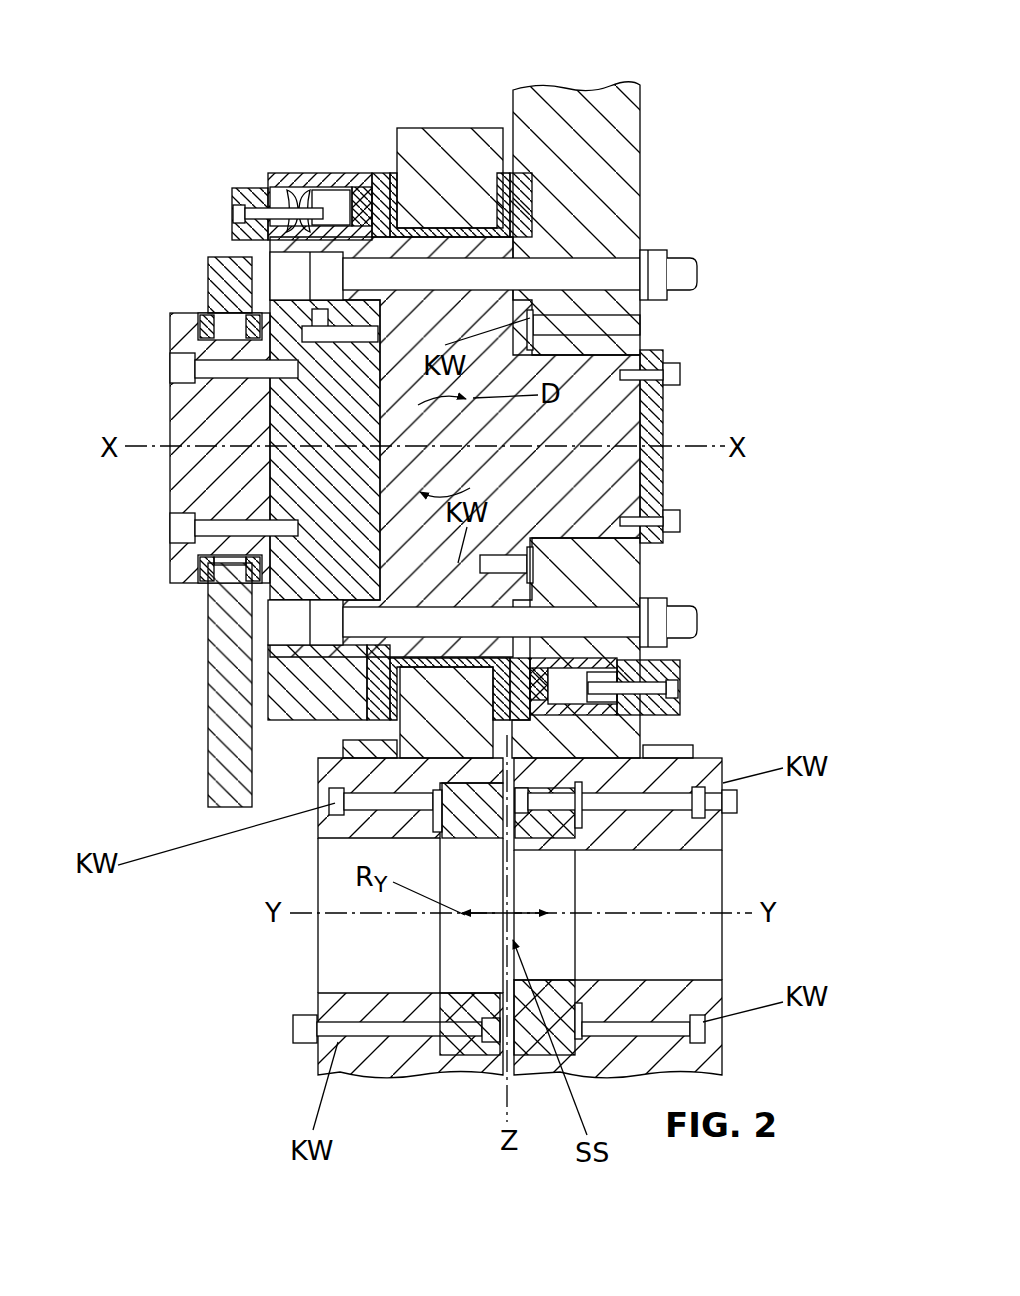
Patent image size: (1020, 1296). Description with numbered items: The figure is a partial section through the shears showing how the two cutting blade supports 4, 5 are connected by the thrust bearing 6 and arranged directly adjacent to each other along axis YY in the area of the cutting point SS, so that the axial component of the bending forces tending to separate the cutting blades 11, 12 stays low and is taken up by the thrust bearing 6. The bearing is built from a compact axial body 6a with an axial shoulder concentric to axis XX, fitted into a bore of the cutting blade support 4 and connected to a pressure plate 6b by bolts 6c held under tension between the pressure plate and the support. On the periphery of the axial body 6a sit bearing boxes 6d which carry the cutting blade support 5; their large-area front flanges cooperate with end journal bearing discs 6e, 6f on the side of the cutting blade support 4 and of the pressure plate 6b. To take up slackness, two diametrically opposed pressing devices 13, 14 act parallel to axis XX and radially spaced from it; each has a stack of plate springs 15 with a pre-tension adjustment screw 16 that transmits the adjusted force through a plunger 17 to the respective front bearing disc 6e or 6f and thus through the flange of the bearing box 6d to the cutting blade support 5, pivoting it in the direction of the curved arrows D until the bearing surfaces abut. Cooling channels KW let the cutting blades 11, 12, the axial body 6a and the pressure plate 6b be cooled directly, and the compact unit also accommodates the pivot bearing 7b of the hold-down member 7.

The cutting blade support 4 is at (628, 170).
The cutting blade support 5 is at (483, 145).
The thrust bearing 6 is at (443, 218).
The axial body 6a is at (615, 423).
The pressure plate 6b is at (287, 422).
The bolts 6c is at (690, 268).
The bearing boxes 6d is at (393, 173).
The end journal bearing disc 6e is at (520, 173).
The end journal bearing disc 6f is at (383, 173).
The hold-down member 7 is at (220, 680).
The pivot bearing 7b is at (198, 312).
The cutting blade 11 is at (577, 850).
The cutting blade 12 is at (468, 1048).
The pressing device 13 is at (648, 672).
The pressing device 14 is at (303, 168).
The stack of plate springs 15 is at (270, 173).
The pre-tension adjustment screw 16 is at (232, 210).
The plunger 17 is at (355, 175).